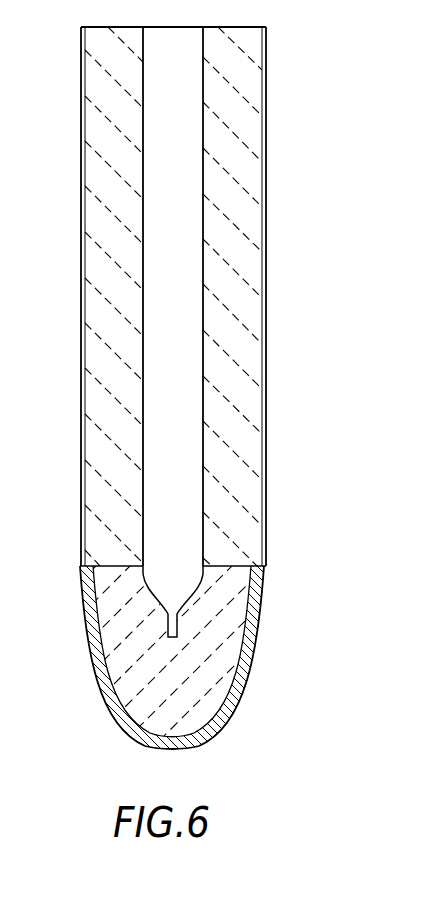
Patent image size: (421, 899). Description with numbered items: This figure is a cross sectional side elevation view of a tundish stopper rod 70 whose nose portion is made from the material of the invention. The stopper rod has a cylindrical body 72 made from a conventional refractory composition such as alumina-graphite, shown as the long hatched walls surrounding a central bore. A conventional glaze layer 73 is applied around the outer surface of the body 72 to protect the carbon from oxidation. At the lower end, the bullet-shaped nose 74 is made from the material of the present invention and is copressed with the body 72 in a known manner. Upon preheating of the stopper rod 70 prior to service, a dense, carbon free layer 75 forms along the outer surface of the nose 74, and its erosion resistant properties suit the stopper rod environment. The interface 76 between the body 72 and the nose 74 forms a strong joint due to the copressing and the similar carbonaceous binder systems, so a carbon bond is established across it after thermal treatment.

The tundish stopper rod 70 is at (300, 117).
The cylindrical body 72 is at (255, 212).
The glaze layer 73 is at (78, 180).
The bullet-shaped nose 74 is at (243, 617).
The dense, carbon free layer 75 is at (250, 680).
The interface 76 is at (238, 568).